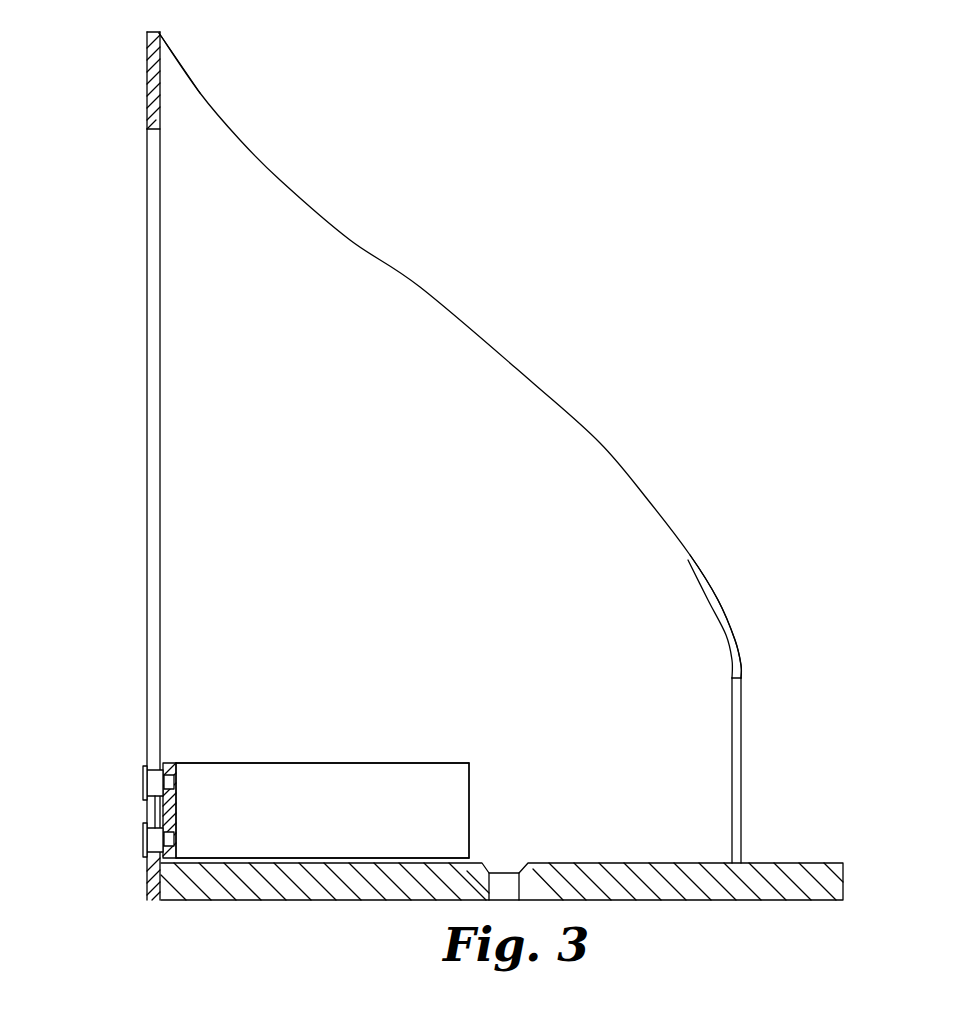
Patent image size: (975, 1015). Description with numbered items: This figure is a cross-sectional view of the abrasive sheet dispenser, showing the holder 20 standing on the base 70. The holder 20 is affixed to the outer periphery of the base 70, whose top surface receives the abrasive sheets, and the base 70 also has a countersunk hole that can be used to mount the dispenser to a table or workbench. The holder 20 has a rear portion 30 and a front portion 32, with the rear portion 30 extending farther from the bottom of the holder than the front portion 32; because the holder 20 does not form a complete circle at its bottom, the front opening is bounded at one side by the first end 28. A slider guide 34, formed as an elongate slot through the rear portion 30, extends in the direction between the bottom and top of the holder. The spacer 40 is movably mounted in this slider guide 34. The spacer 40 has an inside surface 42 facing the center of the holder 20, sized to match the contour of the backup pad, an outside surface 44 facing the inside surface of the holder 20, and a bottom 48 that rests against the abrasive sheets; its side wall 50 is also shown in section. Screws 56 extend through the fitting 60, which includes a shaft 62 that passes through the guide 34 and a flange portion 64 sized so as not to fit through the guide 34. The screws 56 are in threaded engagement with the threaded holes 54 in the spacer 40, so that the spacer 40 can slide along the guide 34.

The holder 20 is at (225, 140).
The first end 28 is at (742, 710).
The rear portion 30 is at (180, 120).
The front portion 32 is at (710, 633).
The slider guide 34 is at (150, 300).
The spacer 40 is at (375, 760).
The inside surface 42 is at (458, 773).
The outside surface 44 is at (163, 760).
The bottom 48 is at (467, 858).
The right wall 50 is at (470, 802).
The threaded holes 54 is at (175, 778).
The screws 56 is at (142, 778).
The fitting 60 is at (132, 768).
The shaft 62 is at (153, 765).
The flange portion 64 is at (143, 765).
The base 70 is at (790, 862).